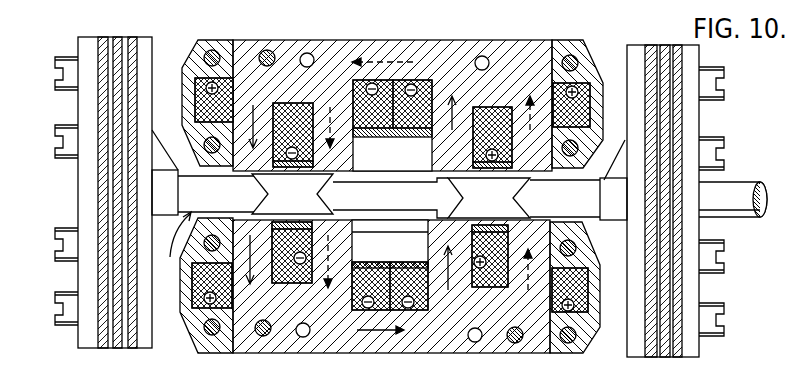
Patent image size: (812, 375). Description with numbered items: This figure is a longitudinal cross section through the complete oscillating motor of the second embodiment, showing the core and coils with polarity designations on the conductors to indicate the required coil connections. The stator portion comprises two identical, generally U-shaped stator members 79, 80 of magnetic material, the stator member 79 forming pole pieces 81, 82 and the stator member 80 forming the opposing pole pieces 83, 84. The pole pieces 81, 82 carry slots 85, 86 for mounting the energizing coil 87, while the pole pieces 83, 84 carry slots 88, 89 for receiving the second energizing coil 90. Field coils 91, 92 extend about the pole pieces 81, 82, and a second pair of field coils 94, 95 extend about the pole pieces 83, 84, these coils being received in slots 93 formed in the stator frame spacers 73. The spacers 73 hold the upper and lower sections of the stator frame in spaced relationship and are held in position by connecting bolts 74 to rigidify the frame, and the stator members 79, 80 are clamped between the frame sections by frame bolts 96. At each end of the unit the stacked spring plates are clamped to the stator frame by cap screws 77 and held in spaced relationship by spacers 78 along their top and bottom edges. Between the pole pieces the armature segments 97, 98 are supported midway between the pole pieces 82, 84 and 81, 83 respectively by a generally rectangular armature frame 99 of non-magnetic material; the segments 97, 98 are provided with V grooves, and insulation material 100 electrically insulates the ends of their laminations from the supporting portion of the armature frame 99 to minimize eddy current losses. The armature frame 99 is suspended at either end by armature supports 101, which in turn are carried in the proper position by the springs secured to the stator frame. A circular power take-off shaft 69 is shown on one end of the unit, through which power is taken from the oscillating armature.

The power take-off shaft 69 is at (750, 216).
The stator frame spacer 73 is at (196, 52).
The connecting bolt 74 is at (568, 54).
The cap screw 77 is at (55, 80).
The spacer 78 is at (655, 350).
The stator member 79 is at (392, 92).
The stator member 80 is at (391, 297).
The pole piece 81 is at (500, 62).
The pole piece 82 is at (294, 44).
The pole piece 83 is at (500, 330).
The pole piece 84 is at (290, 324).
The slot 85 is at (494, 106).
The slot 86 is at (295, 103).
The energizing coil 87 is at (313, 153).
The slot 88 is at (490, 288).
The slot 89 is at (283, 283).
The second energizing coil 90 is at (312, 227).
The field coil 91 is at (430, 90).
The field coil 92 is at (236, 92).
The slot 93 is at (195, 95).
The field coil 94 is at (409, 263).
The field coil 95 is at (236, 290).
The frame bolt 96 is at (263, 337).
The armature segment 97 is at (284, 203).
The armature segment 98 is at (479, 207).
The armature frame 99 is at (175, 240).
The insulation material 100 is at (340, 188).
The armature support 101 is at (158, 168).